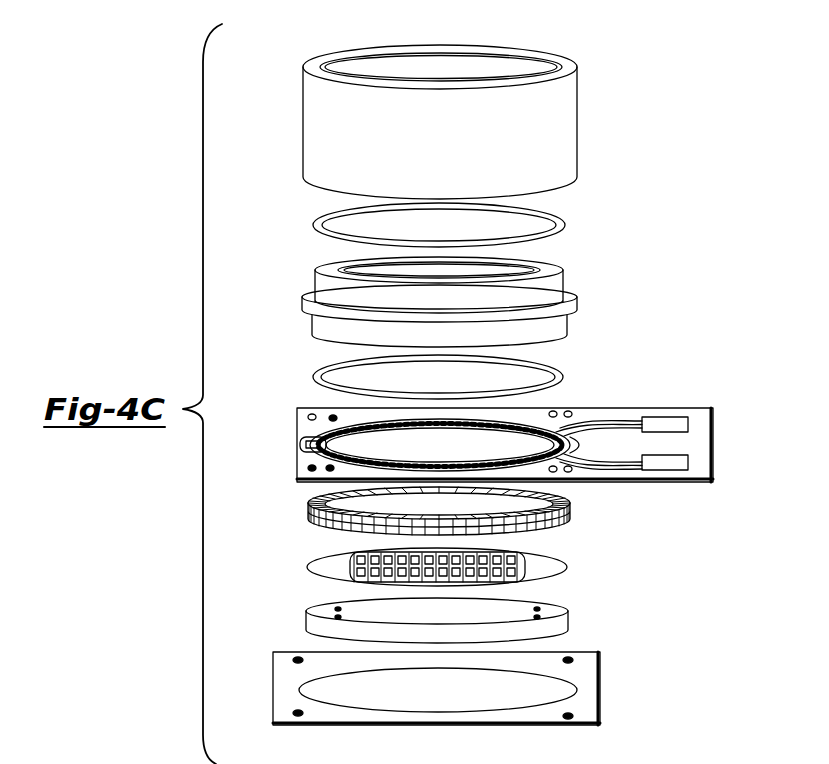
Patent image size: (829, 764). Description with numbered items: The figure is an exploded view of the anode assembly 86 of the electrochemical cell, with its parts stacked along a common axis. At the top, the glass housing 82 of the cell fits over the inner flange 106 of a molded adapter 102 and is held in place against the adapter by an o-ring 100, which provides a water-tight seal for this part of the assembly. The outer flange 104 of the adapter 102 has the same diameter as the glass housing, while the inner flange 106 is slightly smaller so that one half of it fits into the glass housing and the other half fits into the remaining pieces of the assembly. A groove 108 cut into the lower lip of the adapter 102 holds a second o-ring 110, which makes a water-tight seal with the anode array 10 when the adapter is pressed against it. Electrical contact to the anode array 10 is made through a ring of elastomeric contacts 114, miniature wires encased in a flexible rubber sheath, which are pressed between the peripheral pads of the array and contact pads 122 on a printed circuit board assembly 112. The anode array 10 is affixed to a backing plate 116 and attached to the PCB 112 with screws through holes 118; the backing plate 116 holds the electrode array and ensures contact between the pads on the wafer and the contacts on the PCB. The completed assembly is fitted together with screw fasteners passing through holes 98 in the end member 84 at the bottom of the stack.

The anode assembly 86 is at (276, 91).
The glass housing 82 is at (556, 118).
The o-ring 100 is at (562, 225).
The molded adapter 102 is at (451, 302).
The inner flange 106 is at (555, 292).
The outer flange 104 is at (578, 300).
The groove 108 is at (316, 337).
The o-ring 110 is at (560, 386).
The printed circuit board assembly 112 is at (503, 566).
The holes 118 is at (330, 412).
The contact pads 122 is at (305, 438).
The holes 98 is at (310, 470).
The ring of elastomeric contacts 114 is at (563, 514).
The anode array 10 is at (555, 567).
The backing plate 116 is at (567, 614).
The end member 84 is at (603, 685).